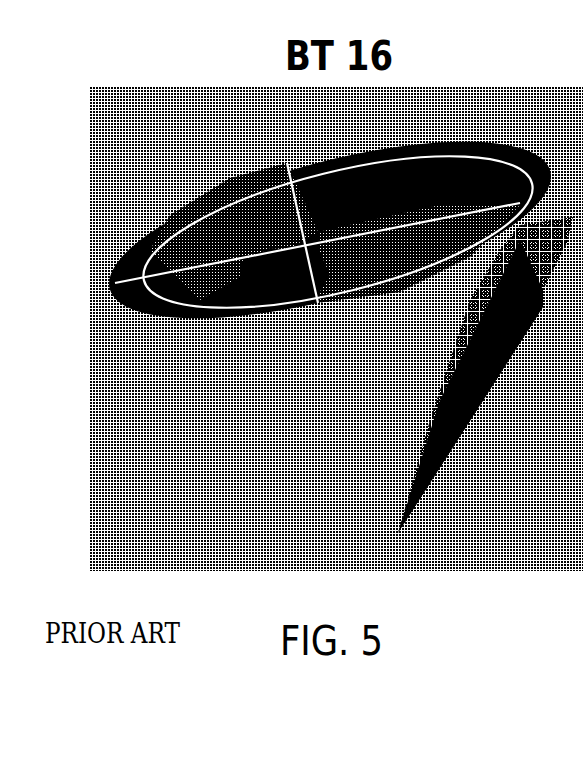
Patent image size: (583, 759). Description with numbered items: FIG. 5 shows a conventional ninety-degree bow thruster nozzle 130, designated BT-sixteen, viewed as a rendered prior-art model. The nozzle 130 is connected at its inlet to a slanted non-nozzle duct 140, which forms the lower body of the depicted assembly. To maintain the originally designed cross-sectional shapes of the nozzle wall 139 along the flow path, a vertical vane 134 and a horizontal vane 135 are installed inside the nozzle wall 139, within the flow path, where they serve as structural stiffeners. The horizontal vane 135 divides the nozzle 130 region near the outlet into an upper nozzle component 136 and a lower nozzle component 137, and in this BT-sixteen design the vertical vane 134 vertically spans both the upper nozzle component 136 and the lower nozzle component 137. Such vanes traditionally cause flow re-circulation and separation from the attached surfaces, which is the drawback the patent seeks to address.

The bow thruster nozzle 130 is at (480, 112).
The vertical vane 134 is at (247, 172).
The horizontal vane 135 is at (223, 237).
The upper nozzle component 136 is at (128, 228).
The lower nozzle component 137 is at (143, 300).
The nozzle wall 139 is at (451, 125).
The slanted non-nozzle duct 140 is at (262, 437).